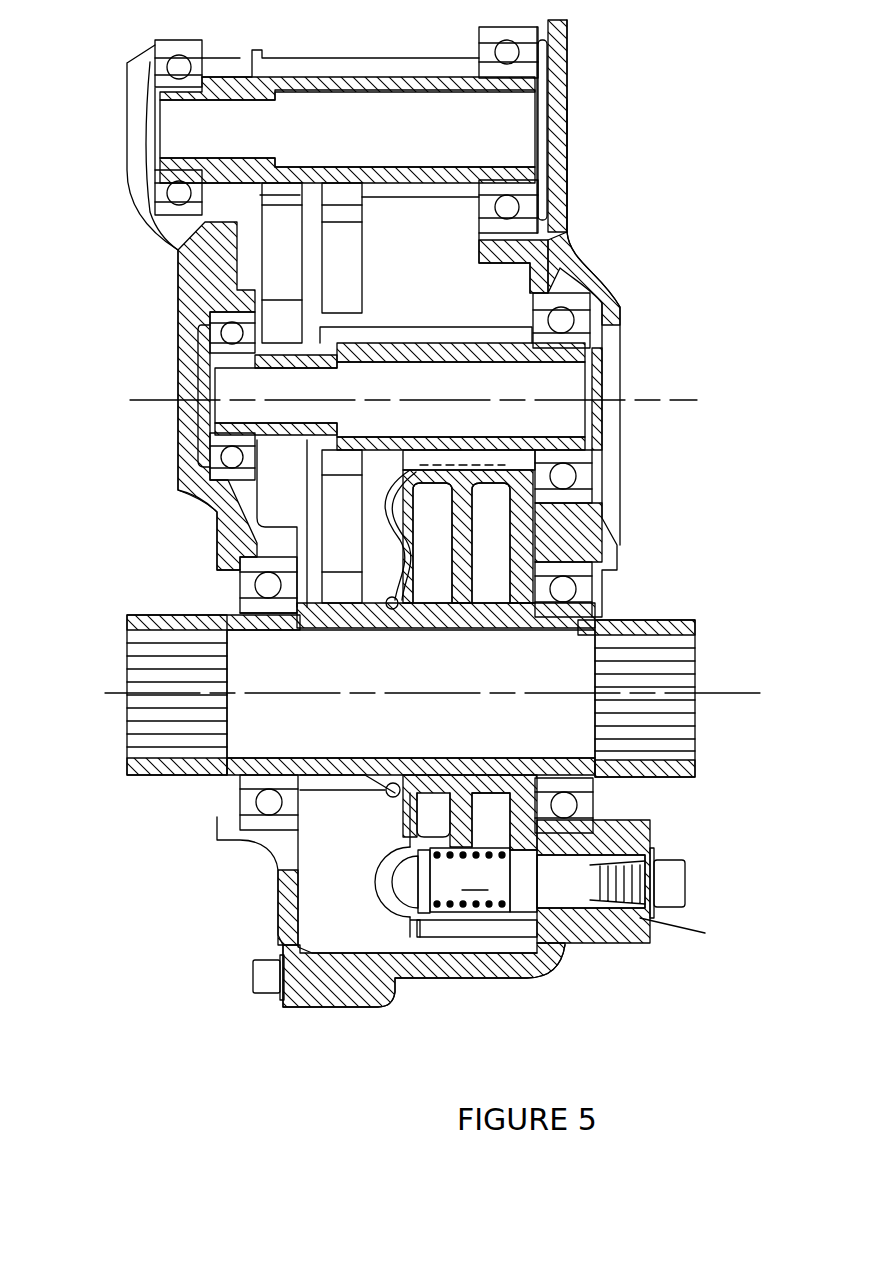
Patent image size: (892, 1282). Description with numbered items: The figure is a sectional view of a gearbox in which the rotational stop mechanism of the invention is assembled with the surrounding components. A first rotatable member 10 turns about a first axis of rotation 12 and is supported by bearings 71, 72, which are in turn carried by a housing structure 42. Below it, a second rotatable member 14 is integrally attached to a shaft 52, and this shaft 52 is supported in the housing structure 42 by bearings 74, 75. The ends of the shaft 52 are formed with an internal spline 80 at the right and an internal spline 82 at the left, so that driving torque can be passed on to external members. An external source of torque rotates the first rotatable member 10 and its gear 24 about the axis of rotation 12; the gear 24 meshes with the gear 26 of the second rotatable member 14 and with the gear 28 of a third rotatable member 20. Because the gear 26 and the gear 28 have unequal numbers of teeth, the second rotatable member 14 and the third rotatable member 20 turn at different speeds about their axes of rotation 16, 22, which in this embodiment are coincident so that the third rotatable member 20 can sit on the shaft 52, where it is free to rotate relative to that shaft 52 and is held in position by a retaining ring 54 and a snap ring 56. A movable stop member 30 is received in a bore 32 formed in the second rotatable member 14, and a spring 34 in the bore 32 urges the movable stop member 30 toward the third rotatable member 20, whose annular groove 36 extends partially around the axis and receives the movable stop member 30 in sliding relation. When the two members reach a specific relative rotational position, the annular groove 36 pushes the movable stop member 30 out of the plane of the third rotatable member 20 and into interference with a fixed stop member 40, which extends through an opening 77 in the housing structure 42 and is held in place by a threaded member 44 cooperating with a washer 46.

The first rotatable member 10 is at (405, 355).
The first axis of rotation 12 is at (687, 400).
The second rotatable member 14 is at (487, 485).
The second axis of rotation 16 is at (713, 695).
The third rotatable member 20 is at (410, 562).
The third axis of rotation 22 is at (760, 695).
The gear teeth 24 is at (387, 330).
The gear teeth 26 is at (512, 443).
The gear teeth 28 is at (407, 443).
The movable stop member 30 is at (400, 883).
The bore 32 is at (523, 912).
The spring 34 is at (447, 900).
The annular groove 36 is at (385, 880).
The fixed stop member 40 is at (557, 892).
The housing structure 42 is at (570, 265).
The threaded member 44 is at (675, 880).
The washer 46 is at (652, 848).
The shaft 52 is at (427, 620).
The retaining ring 54 is at (393, 800).
The snap ring 56 is at (393, 783).
The bearing 71 is at (595, 295).
The bearing 72 is at (215, 325).
The bearing 74 is at (585, 605).
The bearing 75 is at (247, 603).
The opening 77 is at (640, 918).
The internal spline 80 is at (670, 750).
The internal spline 82 is at (152, 730).